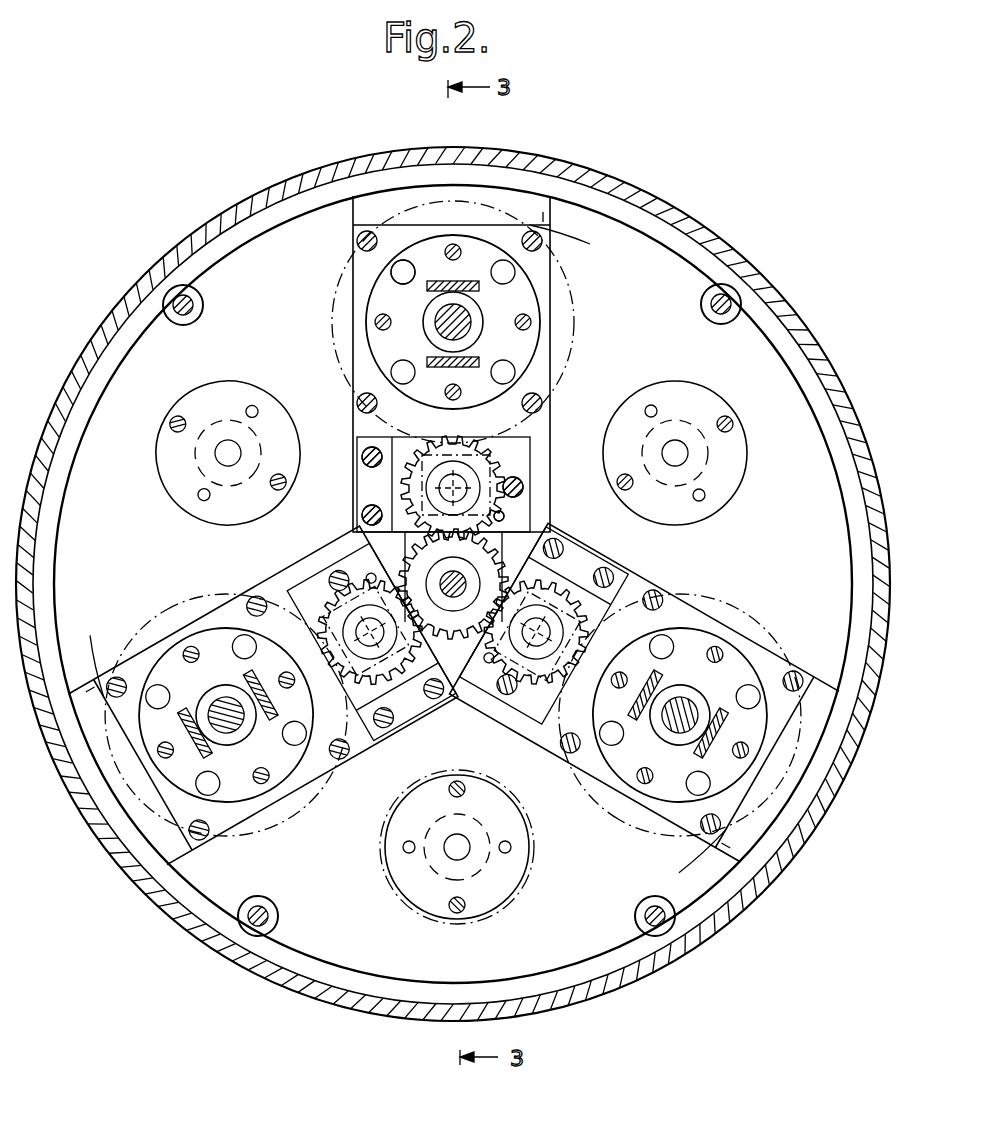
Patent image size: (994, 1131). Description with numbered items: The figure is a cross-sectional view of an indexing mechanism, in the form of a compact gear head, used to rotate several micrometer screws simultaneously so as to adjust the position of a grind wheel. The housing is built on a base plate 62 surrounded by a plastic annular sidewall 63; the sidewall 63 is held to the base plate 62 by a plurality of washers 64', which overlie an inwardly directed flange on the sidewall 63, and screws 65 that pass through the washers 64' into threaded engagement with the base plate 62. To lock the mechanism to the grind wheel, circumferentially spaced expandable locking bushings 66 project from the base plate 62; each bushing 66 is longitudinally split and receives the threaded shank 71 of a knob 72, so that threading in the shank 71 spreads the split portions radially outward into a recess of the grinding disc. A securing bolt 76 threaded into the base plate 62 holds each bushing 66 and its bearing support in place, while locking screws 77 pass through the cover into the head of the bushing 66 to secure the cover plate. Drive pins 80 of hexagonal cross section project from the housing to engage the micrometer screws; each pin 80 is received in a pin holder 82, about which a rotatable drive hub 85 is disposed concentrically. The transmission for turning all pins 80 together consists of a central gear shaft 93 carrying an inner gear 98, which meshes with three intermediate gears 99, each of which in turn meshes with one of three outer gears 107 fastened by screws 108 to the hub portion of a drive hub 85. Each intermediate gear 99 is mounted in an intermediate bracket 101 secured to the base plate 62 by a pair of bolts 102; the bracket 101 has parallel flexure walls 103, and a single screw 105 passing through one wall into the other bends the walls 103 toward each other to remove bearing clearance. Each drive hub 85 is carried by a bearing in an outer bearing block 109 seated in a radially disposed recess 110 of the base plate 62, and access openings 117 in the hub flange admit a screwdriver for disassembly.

The base plate 62 is at (300, 237).
The annular sidewall 63 is at (196, 236).
The washer 64' is at (205, 298).
The screw 65 is at (723, 314).
The expandable locking bushing 66 is at (490, 828).
The threaded shank 71 is at (682, 457).
The knob 72 is at (532, 830).
The securing bolt 76 is at (736, 420).
The locking screw 77 is at (650, 404).
The drive pin 80 is at (440, 323).
The pin holder 82 is at (442, 312).
The drive hub 85 is at (477, 263).
The central gear shaft 93 is at (472, 590).
The inner gear 98 is at (510, 520).
The intermediate gear 99 is at (484, 462).
The intermediate bracket 101 is at (352, 447).
The bolt 102 is at (370, 507).
The flexure wall 103 is at (310, 588).
The screw 105 is at (520, 488).
The outer gear 107 is at (568, 345).
The screw 108 is at (378, 321).
The outer bearing block 109 is at (566, 238).
The radially disposed recess 110 is at (548, 221).
The access opening 117 is at (404, 262).